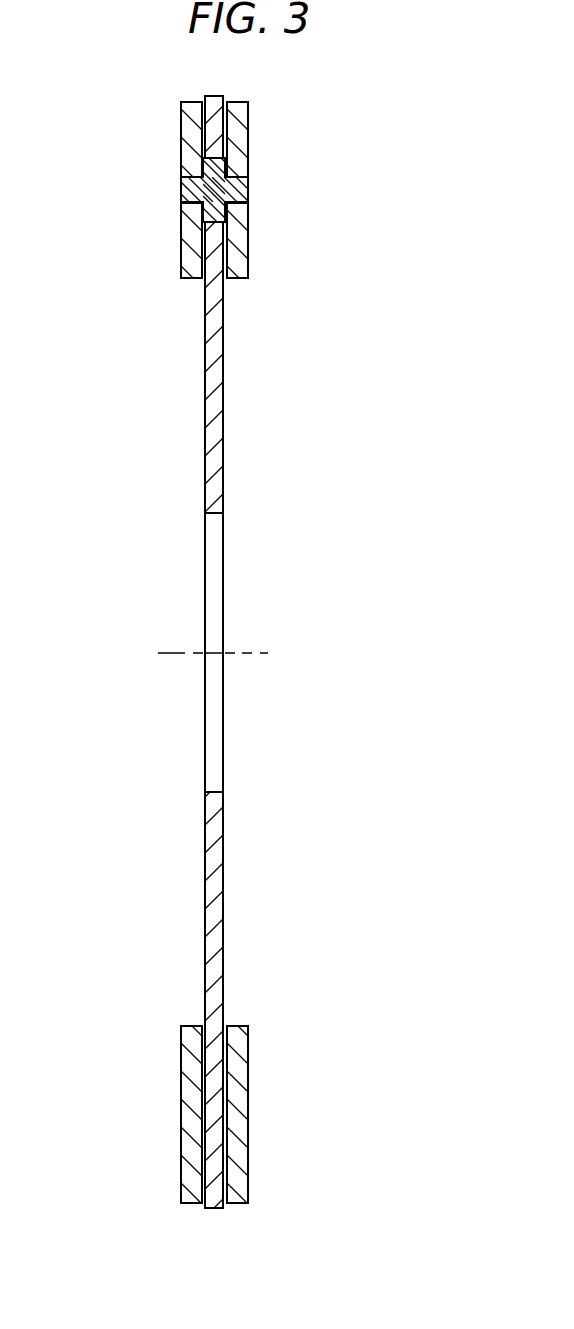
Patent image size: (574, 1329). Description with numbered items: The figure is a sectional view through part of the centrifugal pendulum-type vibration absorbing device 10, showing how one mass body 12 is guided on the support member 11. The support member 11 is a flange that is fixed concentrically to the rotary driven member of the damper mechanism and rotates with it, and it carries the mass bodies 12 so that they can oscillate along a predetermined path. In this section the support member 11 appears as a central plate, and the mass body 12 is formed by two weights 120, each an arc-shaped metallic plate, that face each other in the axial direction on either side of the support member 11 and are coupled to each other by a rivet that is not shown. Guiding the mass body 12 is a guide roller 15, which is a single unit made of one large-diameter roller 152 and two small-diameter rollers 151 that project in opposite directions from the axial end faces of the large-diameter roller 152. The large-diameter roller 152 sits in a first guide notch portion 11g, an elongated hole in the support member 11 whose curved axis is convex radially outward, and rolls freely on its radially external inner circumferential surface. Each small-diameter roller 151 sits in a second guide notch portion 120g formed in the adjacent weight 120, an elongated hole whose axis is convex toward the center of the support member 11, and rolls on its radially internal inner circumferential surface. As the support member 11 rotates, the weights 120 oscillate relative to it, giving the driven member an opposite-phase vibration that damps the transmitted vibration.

The centrifugal pendulum-type vibration absorbing device 10 is at (166, 869).
The support member 11 is at (215, 907).
The first guide notch portion 11g is at (222, 222).
The mass body 12 is at (256, 139).
The weight 120 is at (202, 1108).
The second guide notch portion 120g is at (181, 194).
The guide roller 15 is at (373, 137).
The small-diameter roller 151 is at (190, 192).
The large-diameter roller 152 is at (215, 165).